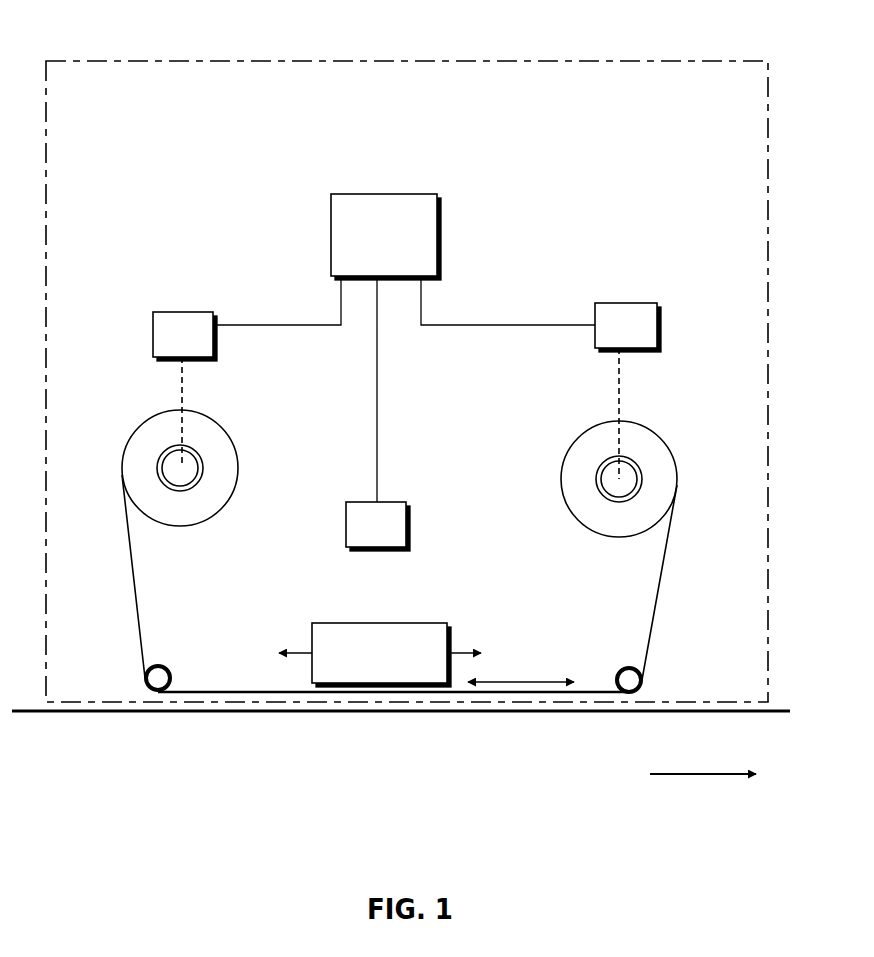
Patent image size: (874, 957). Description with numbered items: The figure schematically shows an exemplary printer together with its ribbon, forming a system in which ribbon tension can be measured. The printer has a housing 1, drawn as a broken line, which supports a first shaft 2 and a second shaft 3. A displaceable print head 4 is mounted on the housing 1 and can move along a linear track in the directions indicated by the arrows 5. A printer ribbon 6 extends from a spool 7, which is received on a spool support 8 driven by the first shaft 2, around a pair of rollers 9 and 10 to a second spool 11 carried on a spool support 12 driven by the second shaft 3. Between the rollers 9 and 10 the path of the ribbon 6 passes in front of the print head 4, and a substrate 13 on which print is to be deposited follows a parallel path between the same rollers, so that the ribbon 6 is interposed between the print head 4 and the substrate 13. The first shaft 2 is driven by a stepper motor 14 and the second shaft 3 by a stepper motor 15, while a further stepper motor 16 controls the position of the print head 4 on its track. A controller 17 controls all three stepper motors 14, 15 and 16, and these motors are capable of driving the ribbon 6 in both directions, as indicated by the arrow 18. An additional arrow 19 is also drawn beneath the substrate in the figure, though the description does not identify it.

The housing 1 is at (640, 62).
The first shaft 2 is at (172, 464).
The second shaft 3 is at (632, 479).
The print head 4 is at (397, 685).
The arrows 5 is at (303, 648).
The printer ribbon 6 is at (130, 580).
The spool 7 is at (180, 512).
The spool support 8 is at (172, 446).
The roller 9 is at (162, 665).
The roller 10 is at (628, 667).
The second spool 11 is at (652, 440).
The spool support 12 is at (622, 498).
The substrate 13 is at (248, 712).
The stepper motor 14 is at (168, 310).
The stepper motor 15 is at (617, 302).
The stepper motor 16 is at (388, 502).
The controller 17 is at (378, 193).
The arrow 18 is at (500, 682).
The housing movement direction 19 is at (700, 773).